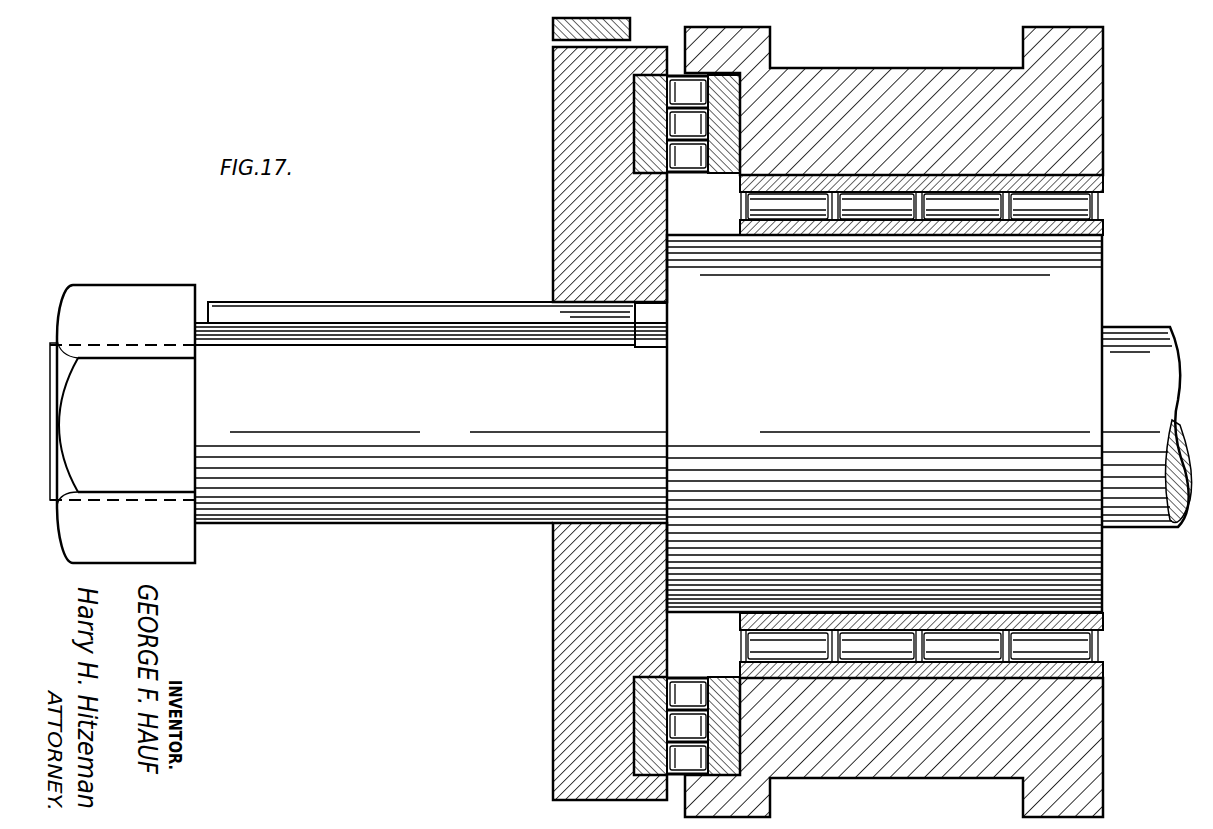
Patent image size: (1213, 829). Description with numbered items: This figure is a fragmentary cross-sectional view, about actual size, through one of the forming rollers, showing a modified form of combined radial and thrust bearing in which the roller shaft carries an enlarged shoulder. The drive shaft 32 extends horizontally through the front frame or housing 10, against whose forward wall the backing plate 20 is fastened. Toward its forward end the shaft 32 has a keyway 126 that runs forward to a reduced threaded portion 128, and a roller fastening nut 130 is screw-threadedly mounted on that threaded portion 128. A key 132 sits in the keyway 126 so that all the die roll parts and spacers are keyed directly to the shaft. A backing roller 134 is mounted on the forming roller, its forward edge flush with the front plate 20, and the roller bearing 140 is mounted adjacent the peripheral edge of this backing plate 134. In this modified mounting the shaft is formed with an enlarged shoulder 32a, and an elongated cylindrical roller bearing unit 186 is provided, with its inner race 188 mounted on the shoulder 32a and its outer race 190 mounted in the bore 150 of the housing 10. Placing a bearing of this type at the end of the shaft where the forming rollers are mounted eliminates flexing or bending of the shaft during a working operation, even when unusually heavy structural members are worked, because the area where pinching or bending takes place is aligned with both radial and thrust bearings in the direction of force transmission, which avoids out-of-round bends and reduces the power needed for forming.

The front frame or housing 10 is at (894, 422).
The backing plate 20 is at (553, 28).
The drive shaft 32 is at (358, 443).
The enlarged shoulder 32a is at (929, 423).
The keyway 126 is at (415, 366).
The reduced threaded portion 128 is at (140, 346).
The roller fastening nut 130 is at (133, 290).
The key 132 is at (358, 305).
The backing roller 134 is at (557, 232).
The roller bearing 140 is at (677, 127).
The concentric bore 150 is at (921, 665).
The elongated cylindrical roller bearing unit 186 is at (919, 249).
The inner race 188 is at (921, 263).
The outer race 190 is at (880, 175).